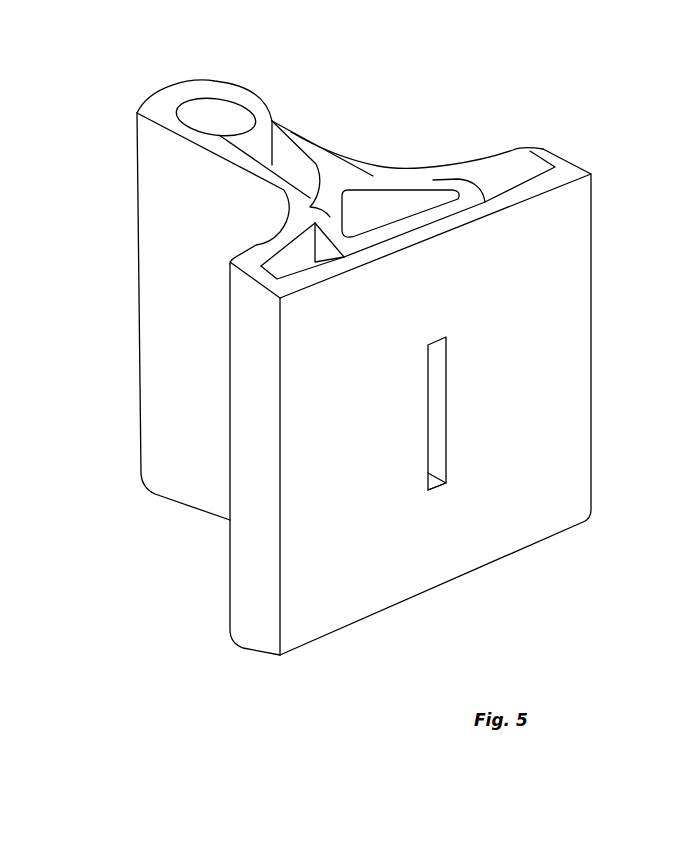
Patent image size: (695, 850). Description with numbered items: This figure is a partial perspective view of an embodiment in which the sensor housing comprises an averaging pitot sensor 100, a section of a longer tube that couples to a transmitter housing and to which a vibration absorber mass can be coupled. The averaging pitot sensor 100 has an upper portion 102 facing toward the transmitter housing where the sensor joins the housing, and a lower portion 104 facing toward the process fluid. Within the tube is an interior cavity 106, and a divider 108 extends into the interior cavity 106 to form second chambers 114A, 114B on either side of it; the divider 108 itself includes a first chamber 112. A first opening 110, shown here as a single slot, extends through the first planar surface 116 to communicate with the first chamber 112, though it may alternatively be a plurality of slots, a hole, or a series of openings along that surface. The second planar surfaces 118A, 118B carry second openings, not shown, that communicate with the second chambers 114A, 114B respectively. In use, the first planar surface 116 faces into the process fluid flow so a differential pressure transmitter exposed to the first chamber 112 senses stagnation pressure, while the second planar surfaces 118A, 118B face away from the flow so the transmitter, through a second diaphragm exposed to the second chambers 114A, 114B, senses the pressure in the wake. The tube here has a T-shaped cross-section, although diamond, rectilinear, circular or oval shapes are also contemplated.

The averaging pitot sensor 100 is at (537, 84).
The upper portion 102 is at (285, 124).
The lower portion 104 is at (243, 641).
The interior cavity 106 is at (305, 159).
The divider 108 is at (290, 197).
The first opening 110 is at (426, 403).
The first chamber 112 is at (390, 199).
The second chamber 114A is at (517, 169).
The second chamber 114B is at (279, 256).
The first planar surface 116 is at (370, 446).
The second planar surface 118A is at (482, 149).
The second planar surface 118B is at (250, 236).